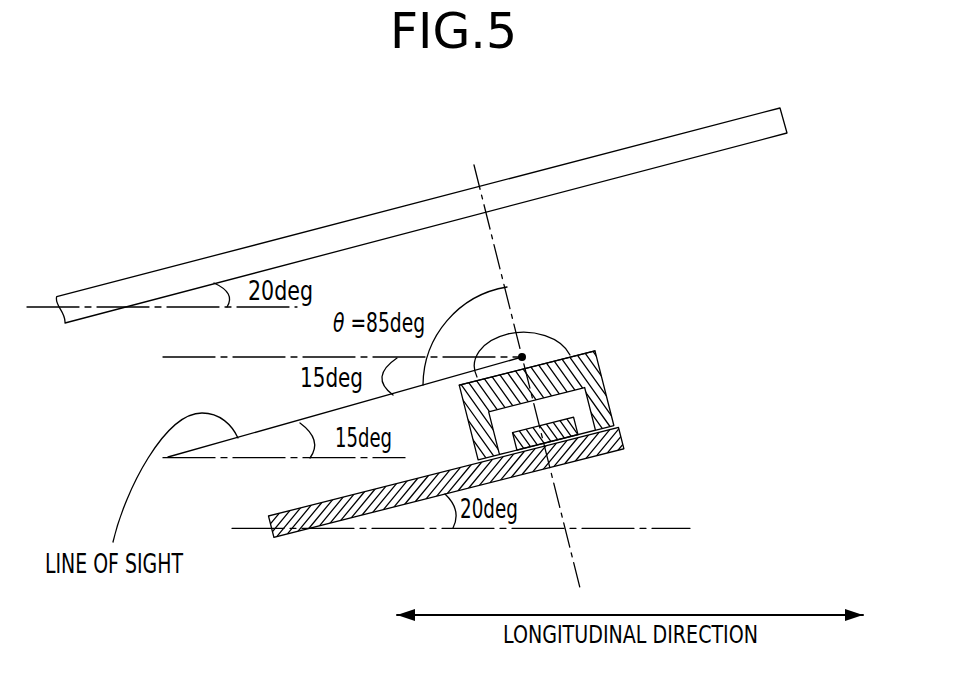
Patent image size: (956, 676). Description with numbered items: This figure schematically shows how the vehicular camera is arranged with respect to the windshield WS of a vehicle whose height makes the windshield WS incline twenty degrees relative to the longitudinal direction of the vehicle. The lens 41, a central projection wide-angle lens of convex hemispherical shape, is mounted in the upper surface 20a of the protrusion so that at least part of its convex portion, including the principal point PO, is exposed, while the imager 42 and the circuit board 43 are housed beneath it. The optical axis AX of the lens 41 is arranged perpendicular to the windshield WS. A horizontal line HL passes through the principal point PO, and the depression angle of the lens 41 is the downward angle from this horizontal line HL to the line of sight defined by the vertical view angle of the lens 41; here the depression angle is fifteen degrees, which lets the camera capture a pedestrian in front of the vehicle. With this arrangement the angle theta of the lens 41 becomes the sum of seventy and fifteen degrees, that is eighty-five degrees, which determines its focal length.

The lens 41 is at (542, 343).
The imager 42 is at (575, 417).
The circuit board 43 is at (622, 433).
The upper surface of the protrusion 20a is at (588, 352).
The windshield WS is at (637, 145).
The optical axis AX is at (497, 253).
The principal point PO is at (523, 356).
The horizontal line HL is at (188, 357).